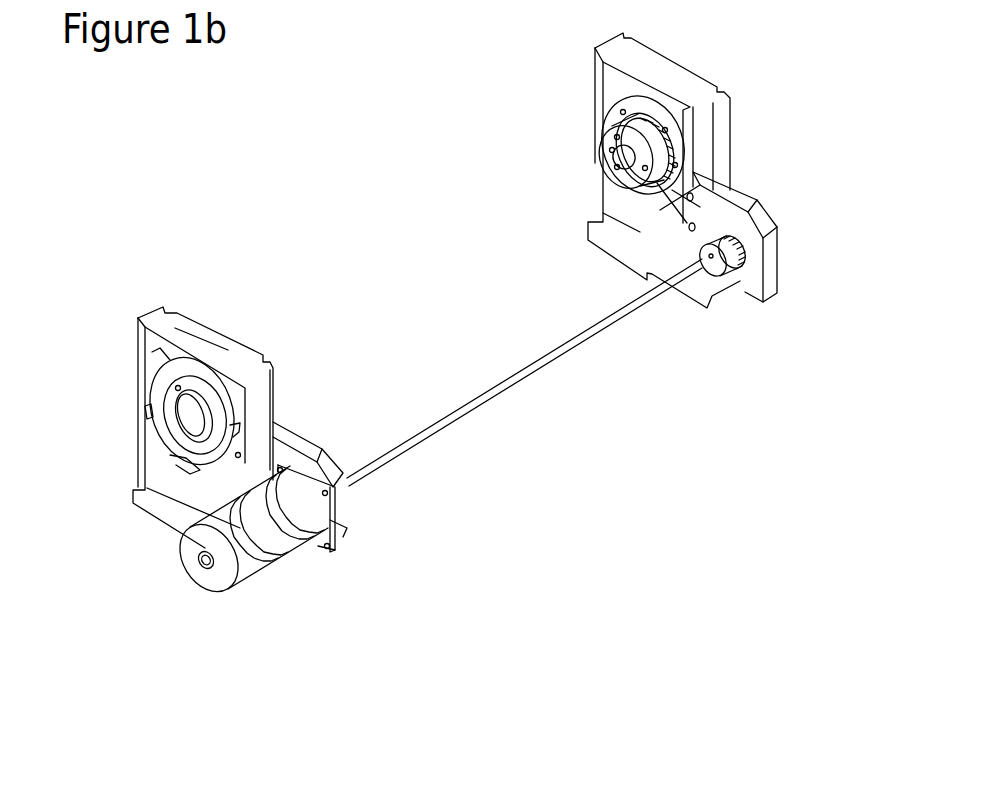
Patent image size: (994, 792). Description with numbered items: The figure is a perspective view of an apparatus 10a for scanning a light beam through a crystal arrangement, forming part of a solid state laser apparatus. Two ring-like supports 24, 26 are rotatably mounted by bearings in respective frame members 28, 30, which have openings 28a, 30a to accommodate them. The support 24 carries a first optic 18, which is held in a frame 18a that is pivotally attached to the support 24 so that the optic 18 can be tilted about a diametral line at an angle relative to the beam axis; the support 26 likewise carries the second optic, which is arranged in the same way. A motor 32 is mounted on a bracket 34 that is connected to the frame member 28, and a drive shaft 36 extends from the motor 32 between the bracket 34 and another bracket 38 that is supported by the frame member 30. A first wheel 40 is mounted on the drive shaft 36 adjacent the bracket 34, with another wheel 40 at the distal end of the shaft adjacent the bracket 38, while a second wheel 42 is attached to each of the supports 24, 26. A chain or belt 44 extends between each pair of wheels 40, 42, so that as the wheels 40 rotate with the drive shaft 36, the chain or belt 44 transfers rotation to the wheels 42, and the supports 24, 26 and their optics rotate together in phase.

The apparatus for scanning a light beam 10a is at (304, 124).
The first optic 18 is at (177, 407).
The frame 18a is at (177, 450).
The support 24 is at (140, 412).
The support 26 is at (680, 152).
The frame member 28 is at (162, 322).
The opening 28a is at (213, 385).
The frame member 30 is at (613, 93).
The opening 30a is at (658, 100).
The motor 32 is at (290, 601).
The bracket 34 is at (298, 428).
The drive shaft 36 is at (577, 378).
The bracket 38 is at (758, 217).
The first wheel 40 is at (743, 272).
The second wheel 42 is at (607, 127).
The chain or belt 44 is at (670, 213).